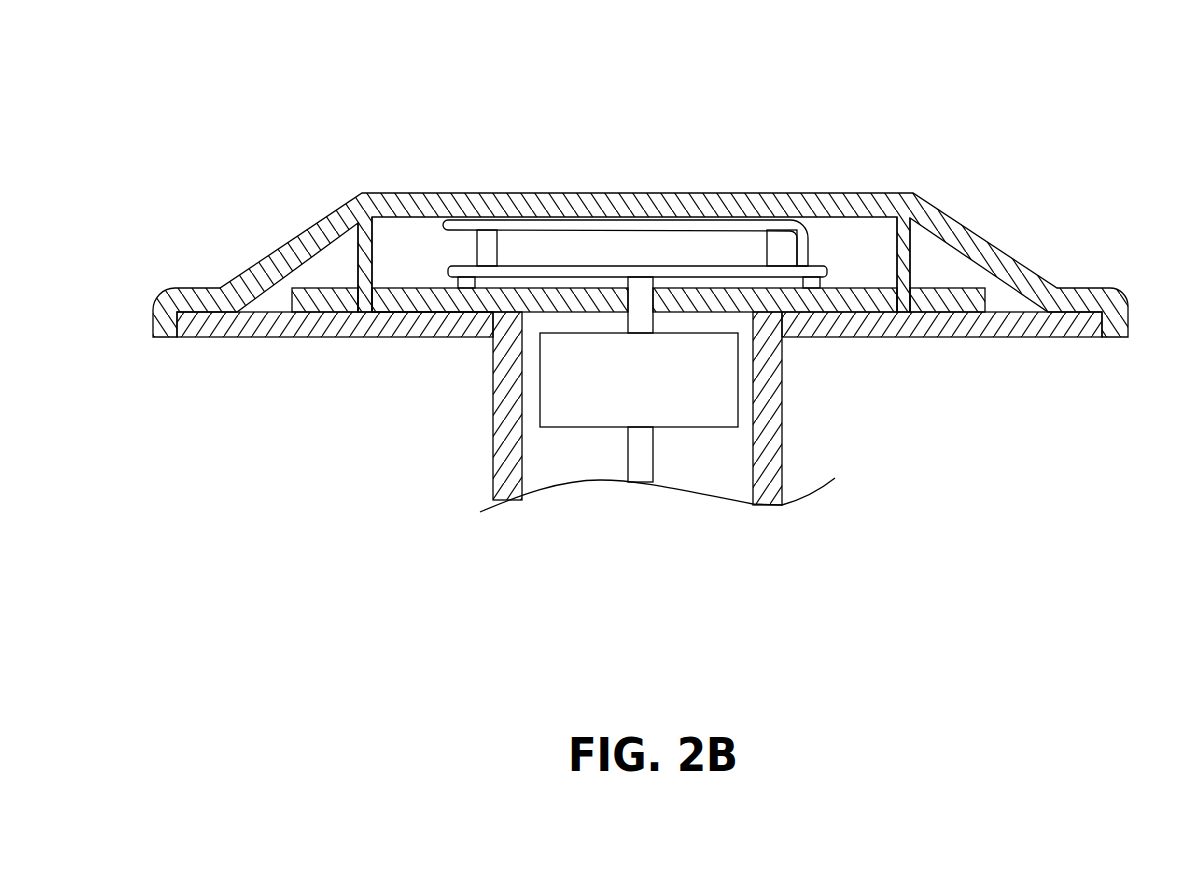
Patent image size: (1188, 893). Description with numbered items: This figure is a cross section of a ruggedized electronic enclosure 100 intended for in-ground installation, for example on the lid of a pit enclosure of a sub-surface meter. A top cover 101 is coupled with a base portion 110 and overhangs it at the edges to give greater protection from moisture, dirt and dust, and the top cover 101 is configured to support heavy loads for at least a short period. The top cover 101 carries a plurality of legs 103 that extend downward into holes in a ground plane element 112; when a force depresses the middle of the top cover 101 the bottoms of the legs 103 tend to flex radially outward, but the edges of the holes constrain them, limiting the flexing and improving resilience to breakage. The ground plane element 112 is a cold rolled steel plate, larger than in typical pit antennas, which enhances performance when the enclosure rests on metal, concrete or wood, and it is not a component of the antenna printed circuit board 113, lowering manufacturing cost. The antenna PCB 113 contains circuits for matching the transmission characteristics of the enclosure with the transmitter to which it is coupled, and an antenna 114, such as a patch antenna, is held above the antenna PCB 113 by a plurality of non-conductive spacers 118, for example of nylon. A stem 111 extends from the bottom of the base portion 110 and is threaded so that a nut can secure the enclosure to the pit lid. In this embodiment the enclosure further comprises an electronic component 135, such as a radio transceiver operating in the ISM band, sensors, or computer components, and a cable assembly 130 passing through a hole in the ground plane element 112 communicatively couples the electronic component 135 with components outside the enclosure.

The ruggedized electronic enclosure 100 is at (263, 75).
The top cover 101 is at (400, 208).
The legs 103 is at (370, 247).
The base portion 110 is at (1003, 337).
The stem 111 is at (782, 443).
The ground plane element 112 is at (330, 302).
The antenna printed circuit board 113 is at (476, 303).
The antenna 114 is at (565, 226).
The spacers 118 is at (496, 243).
The cable assembly 130 is at (642, 462).
The electronic component 135 is at (568, 407).